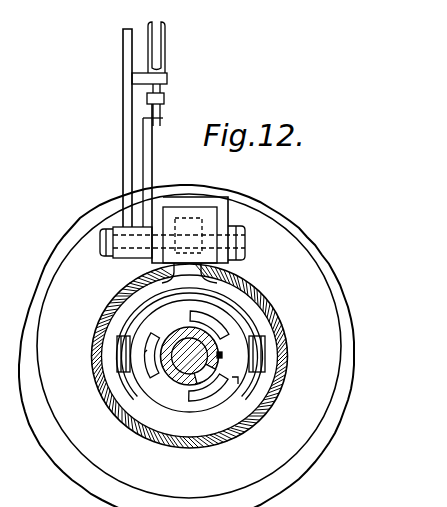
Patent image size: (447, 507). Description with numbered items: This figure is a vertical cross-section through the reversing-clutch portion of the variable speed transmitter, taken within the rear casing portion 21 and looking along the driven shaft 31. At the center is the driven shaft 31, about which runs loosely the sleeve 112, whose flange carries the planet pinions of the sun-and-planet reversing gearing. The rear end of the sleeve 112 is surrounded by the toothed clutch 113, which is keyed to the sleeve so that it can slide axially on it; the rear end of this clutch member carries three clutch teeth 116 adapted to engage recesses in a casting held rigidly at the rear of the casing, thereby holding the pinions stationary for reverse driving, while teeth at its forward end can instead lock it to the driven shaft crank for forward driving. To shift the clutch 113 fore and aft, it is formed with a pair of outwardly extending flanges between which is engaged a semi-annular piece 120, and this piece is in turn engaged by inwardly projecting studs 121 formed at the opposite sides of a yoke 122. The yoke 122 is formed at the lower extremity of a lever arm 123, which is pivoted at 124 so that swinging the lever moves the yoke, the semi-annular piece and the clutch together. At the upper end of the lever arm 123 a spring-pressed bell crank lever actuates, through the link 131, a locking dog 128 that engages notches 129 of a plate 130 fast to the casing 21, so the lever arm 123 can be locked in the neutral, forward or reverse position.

The rear casing portion 21 is at (330, 275).
The driven shaft 31 is at (173, 374).
The sleeve 112 is at (125, 345).
The toothed clutch 113 is at (237, 380).
The clutch teeth 116 is at (212, 323).
The semi-annular piece 120 is at (238, 342).
The studs 121 is at (145, 352).
The yoke 122 is at (135, 305).
The lever arm 123 is at (123, 163).
The pivot 124 is at (232, 214).
The locking dog 128 is at (162, 100).
The notches 129 is at (153, 110).
The plate 130 is at (164, 170).
The link 131 is at (164, 32).